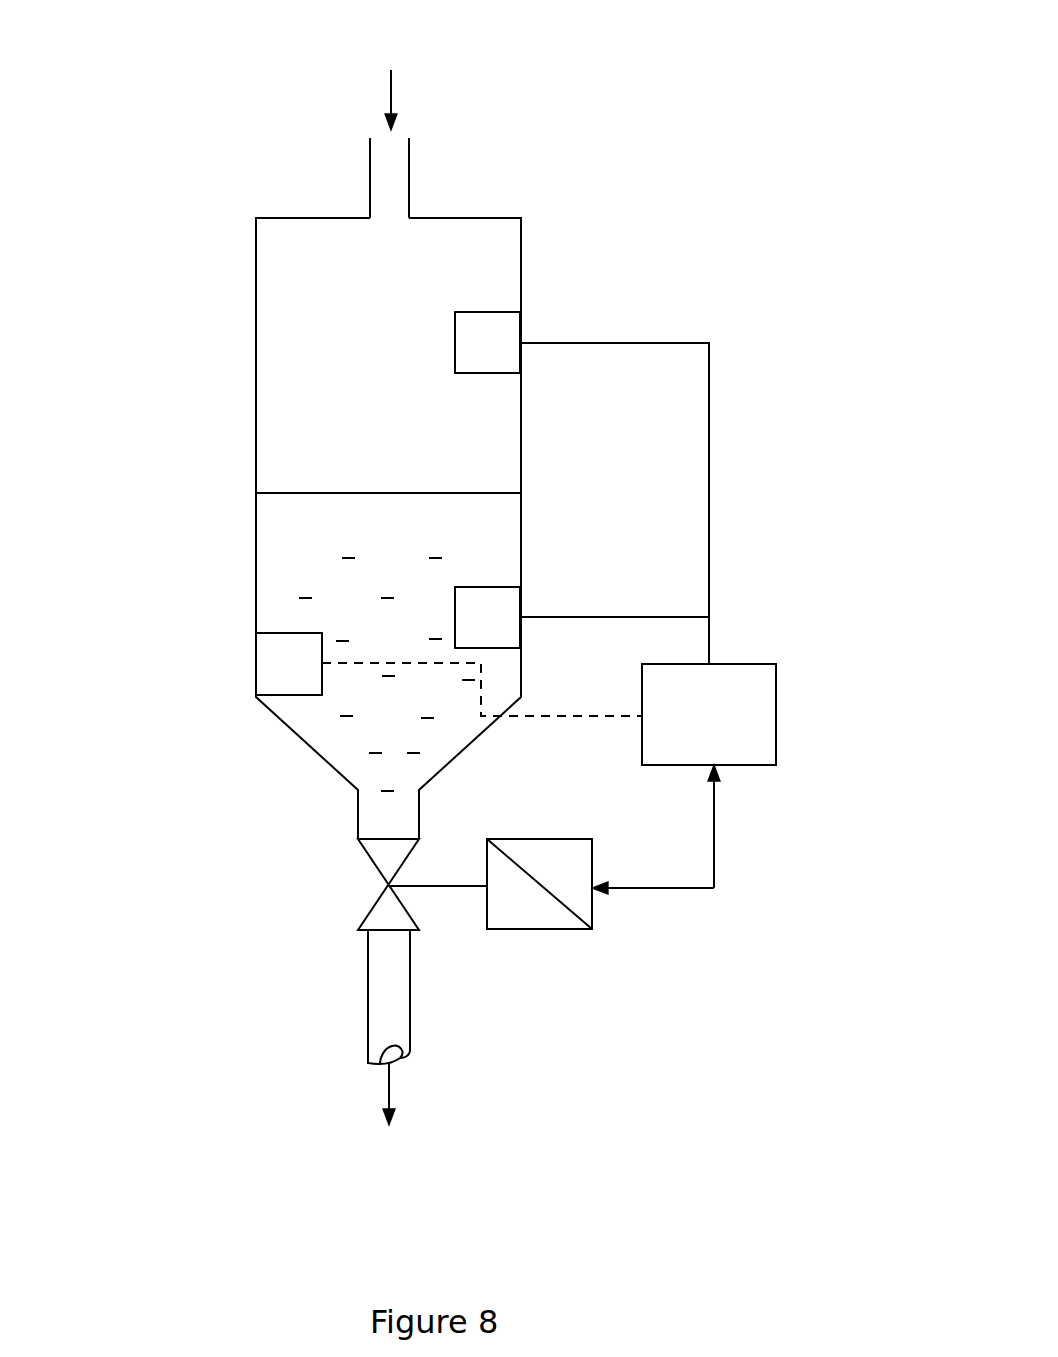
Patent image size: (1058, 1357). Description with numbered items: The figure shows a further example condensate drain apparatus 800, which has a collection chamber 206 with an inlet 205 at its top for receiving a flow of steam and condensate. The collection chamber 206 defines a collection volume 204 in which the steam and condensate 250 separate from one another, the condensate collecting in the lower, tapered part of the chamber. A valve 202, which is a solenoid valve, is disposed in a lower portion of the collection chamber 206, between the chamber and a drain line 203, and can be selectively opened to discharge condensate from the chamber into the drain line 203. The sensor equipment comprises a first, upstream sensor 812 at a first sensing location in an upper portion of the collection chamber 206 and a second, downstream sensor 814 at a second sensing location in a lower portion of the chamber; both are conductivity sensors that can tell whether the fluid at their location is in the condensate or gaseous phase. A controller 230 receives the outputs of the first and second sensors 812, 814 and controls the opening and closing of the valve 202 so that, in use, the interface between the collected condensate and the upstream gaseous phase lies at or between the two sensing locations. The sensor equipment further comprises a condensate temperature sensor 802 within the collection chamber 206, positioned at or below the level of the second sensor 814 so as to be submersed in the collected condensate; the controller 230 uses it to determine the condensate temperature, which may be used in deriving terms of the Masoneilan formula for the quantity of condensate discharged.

The condensate drain apparatus 800 is at (738, 28).
The collection volume 204 is at (326, 336).
The inlet 205 is at (373, 170).
The first sensor 812 is at (508, 322).
The collection chamber 206 is at (522, 460).
The second sensor 814 is at (495, 596).
The steam and condensate 250 is at (278, 590).
The condensate temperature sensor 802 is at (275, 668).
The controller 230 is at (776, 695).
The valve 202 is at (382, 859).
The drain line 203 is at (378, 1005).